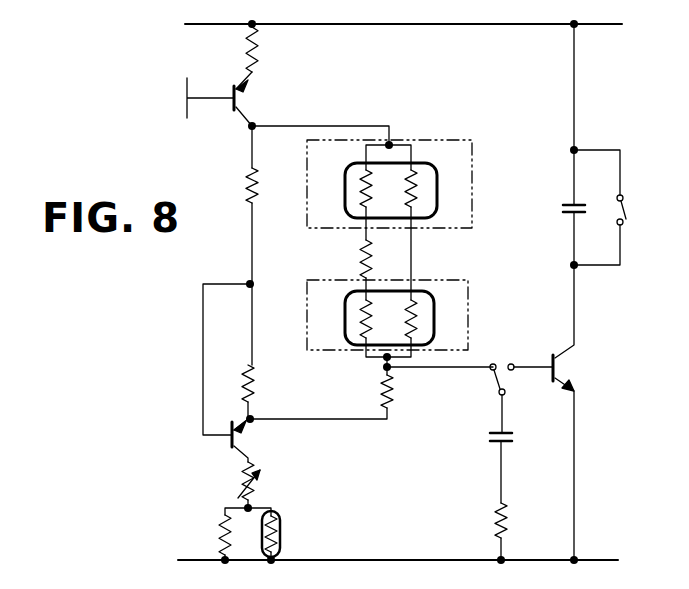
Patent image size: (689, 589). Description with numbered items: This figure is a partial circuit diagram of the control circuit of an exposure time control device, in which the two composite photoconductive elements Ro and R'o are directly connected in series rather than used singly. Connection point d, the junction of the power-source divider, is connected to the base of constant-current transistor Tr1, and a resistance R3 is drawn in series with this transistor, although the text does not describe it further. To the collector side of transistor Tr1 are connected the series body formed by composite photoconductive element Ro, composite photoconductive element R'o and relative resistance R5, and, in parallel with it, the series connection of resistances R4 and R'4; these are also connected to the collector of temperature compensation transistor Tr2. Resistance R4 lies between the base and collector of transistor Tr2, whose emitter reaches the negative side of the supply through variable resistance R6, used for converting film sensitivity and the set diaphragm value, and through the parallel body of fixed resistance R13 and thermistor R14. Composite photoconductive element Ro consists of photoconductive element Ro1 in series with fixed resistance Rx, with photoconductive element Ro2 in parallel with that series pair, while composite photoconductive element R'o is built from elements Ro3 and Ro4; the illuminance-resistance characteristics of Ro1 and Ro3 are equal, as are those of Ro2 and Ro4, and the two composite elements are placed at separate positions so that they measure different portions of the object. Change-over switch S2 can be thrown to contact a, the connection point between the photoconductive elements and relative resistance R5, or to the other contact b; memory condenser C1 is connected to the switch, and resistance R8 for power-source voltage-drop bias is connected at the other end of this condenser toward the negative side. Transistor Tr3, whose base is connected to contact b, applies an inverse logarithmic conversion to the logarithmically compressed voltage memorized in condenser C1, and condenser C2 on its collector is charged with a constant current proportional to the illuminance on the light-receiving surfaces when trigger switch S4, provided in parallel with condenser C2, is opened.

The connected point d is at (202, 98).
The resistor R3 is at (257, 50).
The constant-current transistor Tr1 is at (238, 100).
The resistance R4 is at (250, 176).
The composite photoconductive element Ro is at (484, 134).
The photoconductive element Ro1 is at (358, 181).
The photoconductive element Ro2 is at (418, 190).
The fixed resistance Rx is at (360, 249).
The composite photoconductive element R'o is at (389, 304).
The photoconductive element Ro3 is at (358, 310).
The photoconductive element Ro4 is at (418, 310).
The relative resistance R5 is at (392, 382).
The resistance R'4 is at (266, 383).
The temperature compensation transistor Tr2 is at (237, 440).
The variable resistance R6 is at (274, 494).
The fixed resistance R13 is at (222, 528).
The thermistor R14 is at (280, 542).
The condenser C2 is at (567, 199).
The trigger switch S4 is at (646, 214).
The change over switch S2 is at (505, 390).
The contact a is at (484, 385).
The contact b is at (520, 351).
The memory condenser C1 is at (510, 442).
The resistance for power source voltage drop bias R8 is at (508, 520).
The transistor Tr3 is at (556, 370).